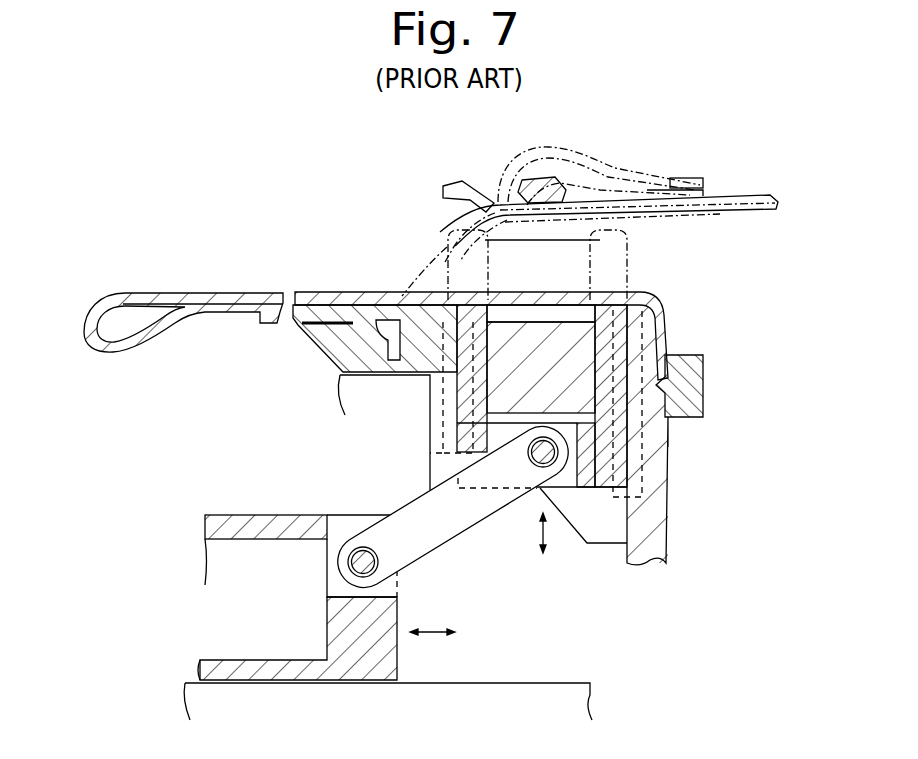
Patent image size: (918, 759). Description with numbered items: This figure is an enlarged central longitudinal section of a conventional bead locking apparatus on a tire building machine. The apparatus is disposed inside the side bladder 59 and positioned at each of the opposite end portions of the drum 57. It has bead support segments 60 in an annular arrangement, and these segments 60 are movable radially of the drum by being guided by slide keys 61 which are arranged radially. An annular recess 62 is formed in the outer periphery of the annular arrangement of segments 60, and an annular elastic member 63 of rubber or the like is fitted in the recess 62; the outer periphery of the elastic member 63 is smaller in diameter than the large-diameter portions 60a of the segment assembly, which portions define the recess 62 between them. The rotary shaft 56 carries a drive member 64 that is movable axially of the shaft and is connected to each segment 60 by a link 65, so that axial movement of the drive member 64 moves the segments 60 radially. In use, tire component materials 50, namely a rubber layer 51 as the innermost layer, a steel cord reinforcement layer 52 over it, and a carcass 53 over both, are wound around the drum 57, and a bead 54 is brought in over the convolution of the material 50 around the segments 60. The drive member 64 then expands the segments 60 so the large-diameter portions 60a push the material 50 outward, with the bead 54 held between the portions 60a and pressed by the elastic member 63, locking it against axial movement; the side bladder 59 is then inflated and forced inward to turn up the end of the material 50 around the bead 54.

The tire component materials 50 is at (726, 196).
The rubber layer 51 is at (722, 216).
The steel cord reinforcement layer 52 is at (495, 208).
The carcass 53 is at (738, 198).
The bead 54 is at (565, 182).
The rotary shaft 56 is at (549, 705).
The drum 57 is at (727, 307).
The side bladder 59 is at (237, 295).
The bead support segments 60 is at (657, 310).
The large-diameter portions 60a is at (485, 298).
The slide keys 61 is at (430, 392).
The annular recess 62 is at (565, 308).
The annular elastic member 63 is at (542, 340).
The drive member 64 is at (276, 533).
The link 65 is at (447, 521).